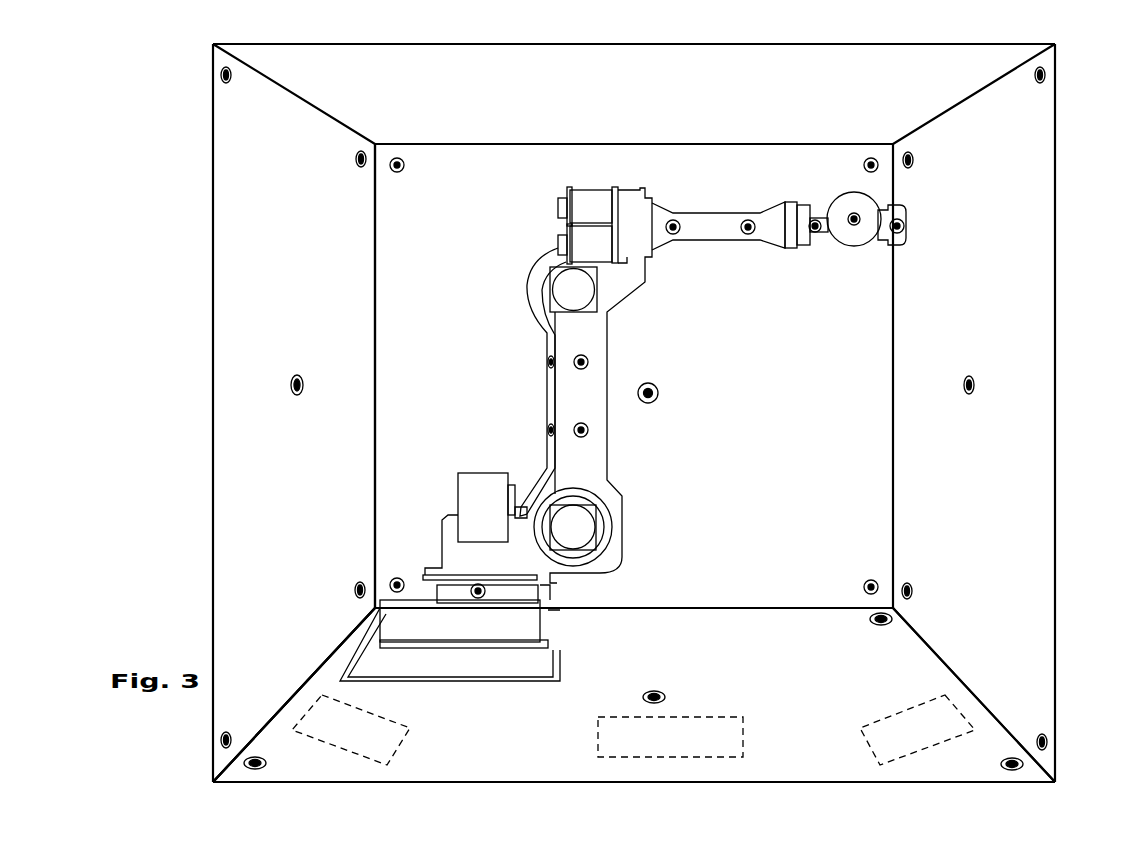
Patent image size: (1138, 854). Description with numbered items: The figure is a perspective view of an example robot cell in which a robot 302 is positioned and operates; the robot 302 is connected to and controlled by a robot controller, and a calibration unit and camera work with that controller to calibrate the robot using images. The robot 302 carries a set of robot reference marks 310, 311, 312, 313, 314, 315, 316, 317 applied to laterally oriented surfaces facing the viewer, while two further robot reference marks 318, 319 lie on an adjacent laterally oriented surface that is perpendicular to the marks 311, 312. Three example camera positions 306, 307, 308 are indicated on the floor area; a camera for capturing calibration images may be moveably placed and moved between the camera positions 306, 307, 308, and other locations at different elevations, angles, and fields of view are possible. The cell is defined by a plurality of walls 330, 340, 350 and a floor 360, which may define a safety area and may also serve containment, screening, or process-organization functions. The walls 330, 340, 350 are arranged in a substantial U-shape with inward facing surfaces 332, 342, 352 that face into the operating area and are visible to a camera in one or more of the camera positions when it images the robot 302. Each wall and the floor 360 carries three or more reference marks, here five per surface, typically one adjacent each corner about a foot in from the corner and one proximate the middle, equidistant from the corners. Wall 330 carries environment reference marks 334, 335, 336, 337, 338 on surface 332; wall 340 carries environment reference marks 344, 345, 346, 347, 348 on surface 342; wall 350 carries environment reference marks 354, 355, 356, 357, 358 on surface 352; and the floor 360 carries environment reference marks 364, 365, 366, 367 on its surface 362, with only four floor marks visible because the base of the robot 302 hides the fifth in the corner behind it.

The robot 302 is at (515, 623).
The camera position 306 is at (373, 738).
The camera position 307 is at (612, 740).
The camera position 308 is at (888, 732).
The robot reference mark 310 is at (486, 591).
The robot reference mark 311 is at (588, 430).
The robot reference mark 312 is at (588, 360).
The robot reference mark 313 is at (674, 234).
The robot reference mark 314 is at (749, 234).
The robot reference mark 315 is at (815, 232).
The robot reference mark 316 is at (856, 224).
The robot reference mark 317 is at (908, 223).
The robot reference mark 318 is at (546, 431).
The robot reference mark 319 is at (546, 363).
The wall 330 is at (213, 392).
The inward facing surface 332 is at (236, 512).
The environment reference mark 334 is at (226, 731).
The environment reference mark 335 is at (232, 79).
The environment reference mark 336 is at (356, 163).
The environment reference mark 337 is at (356, 584).
The environment reference mark 338 is at (300, 395).
The wall 340 is at (572, 143).
The inward facing surface 342 is at (740, 588).
The environment reference mark 344 is at (390, 580).
The environment reference mark 345 is at (404, 167).
The environment reference mark 346 is at (862, 160).
The environment reference mark 347 is at (866, 580).
The environment reference mark 348 is at (658, 391).
The wall 350 is at (1055, 317).
The inward facing surface 352 is at (1028, 468).
The environment reference mark 354 is at (908, 583).
The environment reference mark 355 is at (913, 158).
The environment reference mark 356 is at (1036, 82).
The environment reference mark 357 is at (1040, 734).
The environment reference mark 358 is at (971, 376).
The floor 360 is at (627, 782).
The floor surface 362 is at (478, 755).
The environment reference mark 364 is at (262, 760).
The environment reference mark 365 is at (872, 622).
The environment reference mark 366 is at (1004, 762).
The environment reference mark 367 is at (665, 693).